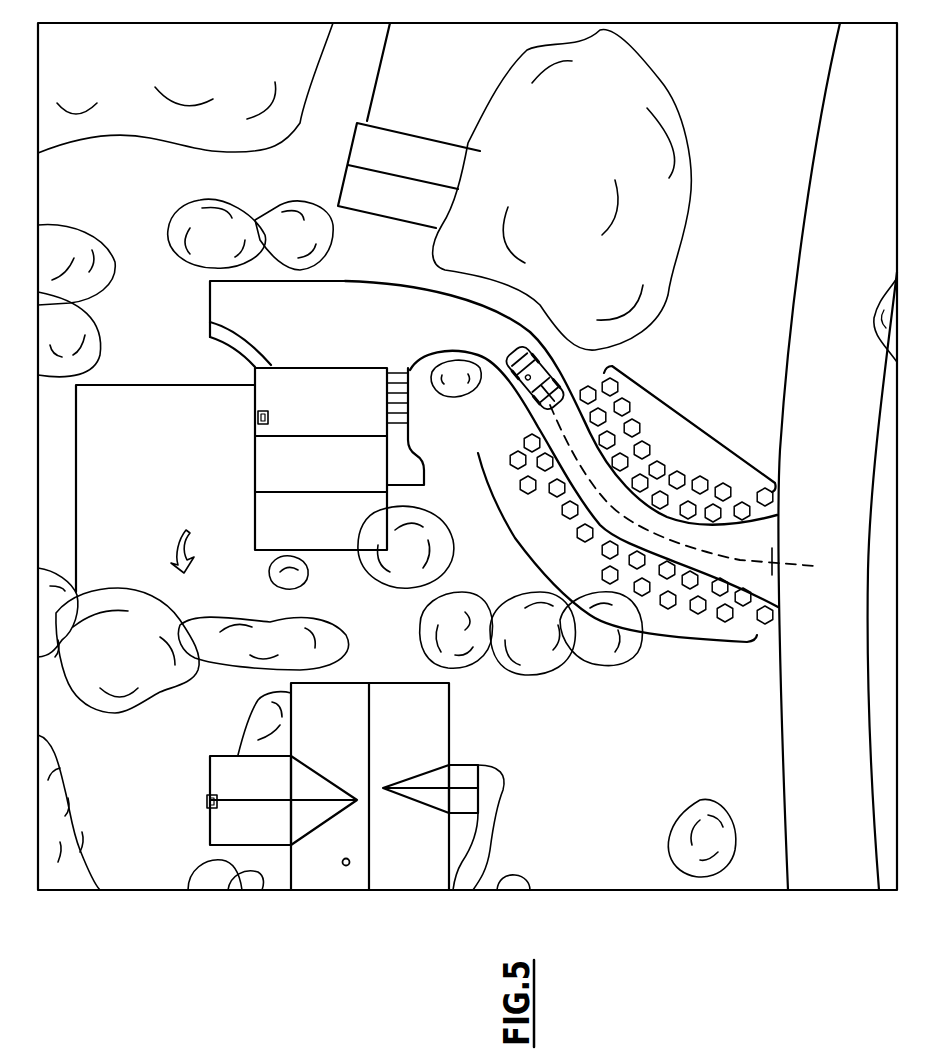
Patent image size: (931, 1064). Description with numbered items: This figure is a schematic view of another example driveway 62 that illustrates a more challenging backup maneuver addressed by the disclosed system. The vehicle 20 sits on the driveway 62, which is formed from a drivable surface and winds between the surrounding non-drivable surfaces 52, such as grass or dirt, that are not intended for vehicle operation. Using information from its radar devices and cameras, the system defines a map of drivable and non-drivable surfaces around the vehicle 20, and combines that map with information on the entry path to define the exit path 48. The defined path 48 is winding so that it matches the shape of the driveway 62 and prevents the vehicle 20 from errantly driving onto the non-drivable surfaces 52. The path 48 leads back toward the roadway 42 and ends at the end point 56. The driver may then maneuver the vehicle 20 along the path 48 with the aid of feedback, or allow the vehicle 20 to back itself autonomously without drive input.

The vehicle 20 is at (520, 352).
The roadway 42 is at (841, 694).
The defined path 48 is at (732, 552).
The non-drivable surfaces 52 is at (695, 426).
The end point 56 is at (773, 570).
The driveway 62 is at (420, 328).